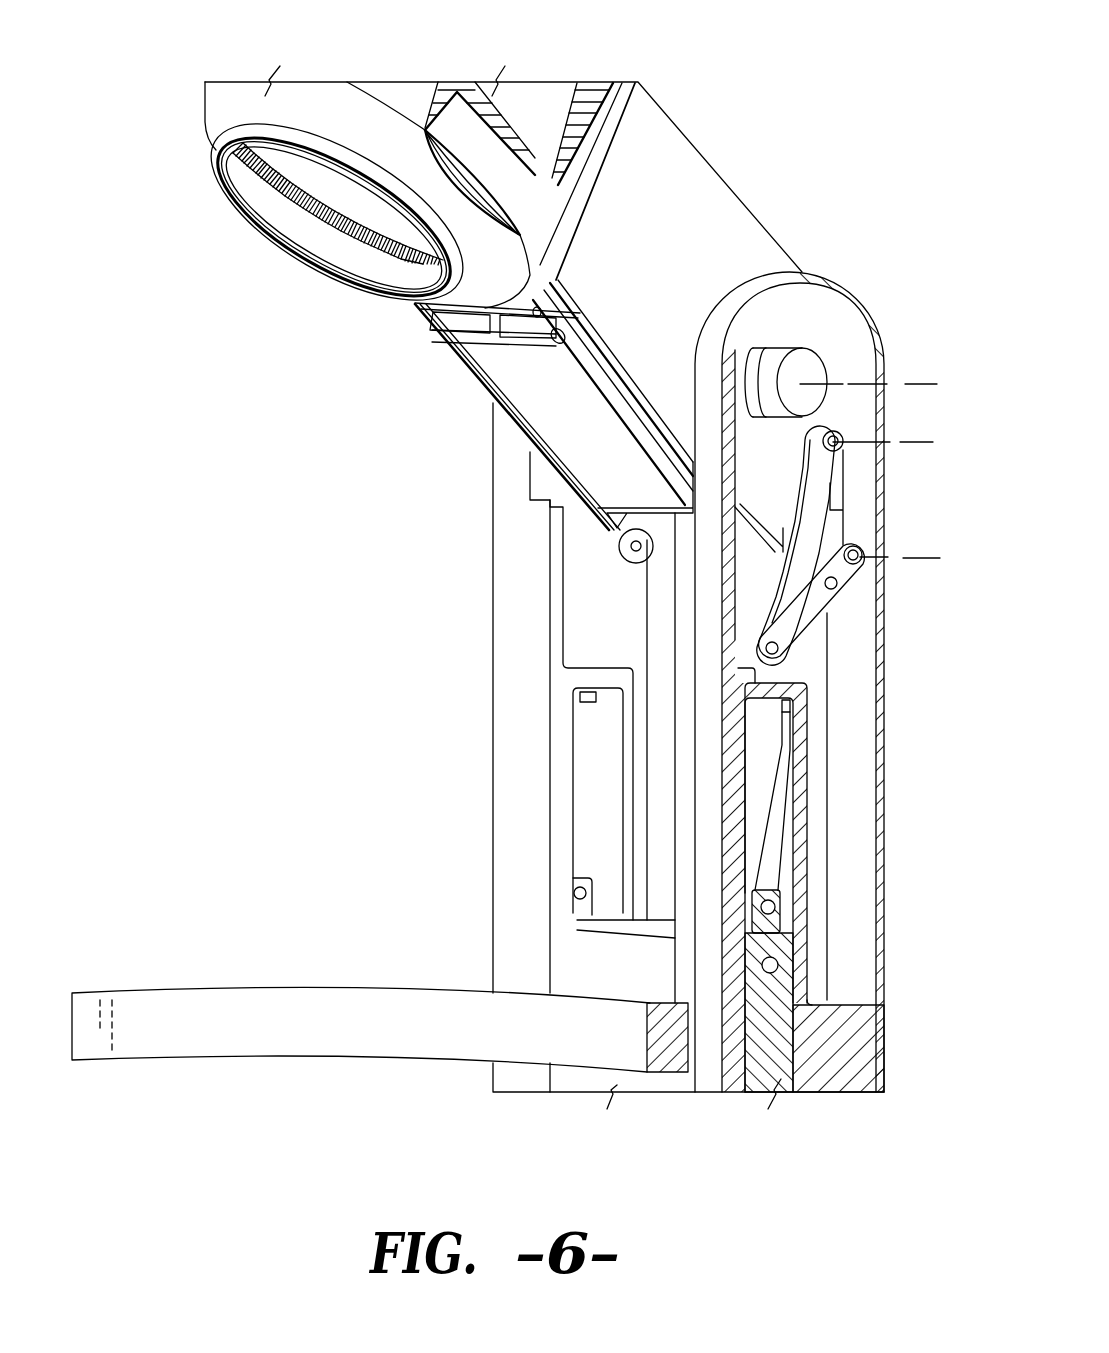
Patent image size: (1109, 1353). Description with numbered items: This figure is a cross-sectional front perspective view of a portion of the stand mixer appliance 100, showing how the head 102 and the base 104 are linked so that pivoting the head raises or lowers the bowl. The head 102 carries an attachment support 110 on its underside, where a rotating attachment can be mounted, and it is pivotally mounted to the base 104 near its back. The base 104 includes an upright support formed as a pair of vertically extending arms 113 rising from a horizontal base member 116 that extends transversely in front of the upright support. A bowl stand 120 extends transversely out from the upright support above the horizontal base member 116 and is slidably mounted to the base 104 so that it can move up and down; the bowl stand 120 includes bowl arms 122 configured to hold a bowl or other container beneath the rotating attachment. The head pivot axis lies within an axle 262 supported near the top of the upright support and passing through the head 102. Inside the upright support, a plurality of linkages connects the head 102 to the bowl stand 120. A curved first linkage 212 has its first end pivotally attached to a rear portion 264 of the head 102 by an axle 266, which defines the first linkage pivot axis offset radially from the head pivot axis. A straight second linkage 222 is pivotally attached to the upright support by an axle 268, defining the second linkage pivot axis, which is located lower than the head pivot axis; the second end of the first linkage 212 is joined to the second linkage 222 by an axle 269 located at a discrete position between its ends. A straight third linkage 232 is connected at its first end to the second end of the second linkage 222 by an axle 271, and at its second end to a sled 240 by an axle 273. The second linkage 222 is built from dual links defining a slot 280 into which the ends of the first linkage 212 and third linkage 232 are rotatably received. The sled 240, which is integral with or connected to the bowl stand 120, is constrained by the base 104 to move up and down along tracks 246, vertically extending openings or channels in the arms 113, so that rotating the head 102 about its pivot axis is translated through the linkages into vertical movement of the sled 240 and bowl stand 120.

The stand mixer appliance 100 is at (182, 320).
The head 102 is at (684, 174).
The base 104 is at (452, 770).
The attachment support 110 is at (224, 104).
The vertically extending arms 113 is at (513, 605).
The horizontal base member 116 is at (840, 1034).
The bowl stand 120 is at (641, 1002).
The bowl arms 122 is at (291, 1013).
The first linkage 212 is at (820, 482).
The second linkage 222 is at (808, 612).
The third linkage 232 is at (766, 767).
The sled 240 is at (773, 1047).
The tracks 246 is at (777, 826).
The axle 262 is at (805, 368).
The rear portion 264 is at (796, 308).
The axle 266 is at (842, 444).
The axle 268 is at (858, 561).
The axle 269 is at (836, 584).
The axle 271 is at (784, 651).
The axle 273 is at (778, 912).
The slot 280 is at (770, 606).